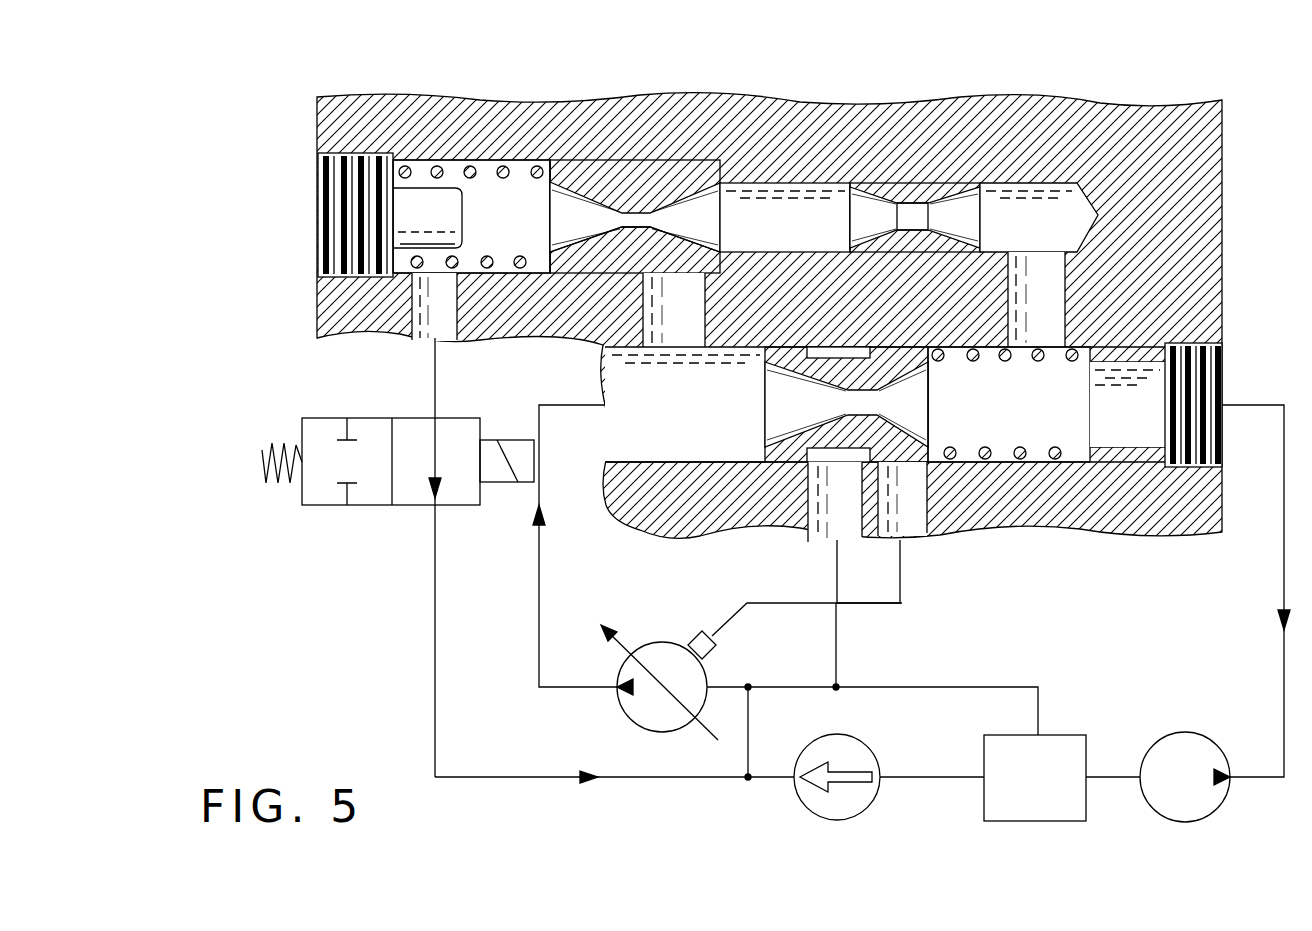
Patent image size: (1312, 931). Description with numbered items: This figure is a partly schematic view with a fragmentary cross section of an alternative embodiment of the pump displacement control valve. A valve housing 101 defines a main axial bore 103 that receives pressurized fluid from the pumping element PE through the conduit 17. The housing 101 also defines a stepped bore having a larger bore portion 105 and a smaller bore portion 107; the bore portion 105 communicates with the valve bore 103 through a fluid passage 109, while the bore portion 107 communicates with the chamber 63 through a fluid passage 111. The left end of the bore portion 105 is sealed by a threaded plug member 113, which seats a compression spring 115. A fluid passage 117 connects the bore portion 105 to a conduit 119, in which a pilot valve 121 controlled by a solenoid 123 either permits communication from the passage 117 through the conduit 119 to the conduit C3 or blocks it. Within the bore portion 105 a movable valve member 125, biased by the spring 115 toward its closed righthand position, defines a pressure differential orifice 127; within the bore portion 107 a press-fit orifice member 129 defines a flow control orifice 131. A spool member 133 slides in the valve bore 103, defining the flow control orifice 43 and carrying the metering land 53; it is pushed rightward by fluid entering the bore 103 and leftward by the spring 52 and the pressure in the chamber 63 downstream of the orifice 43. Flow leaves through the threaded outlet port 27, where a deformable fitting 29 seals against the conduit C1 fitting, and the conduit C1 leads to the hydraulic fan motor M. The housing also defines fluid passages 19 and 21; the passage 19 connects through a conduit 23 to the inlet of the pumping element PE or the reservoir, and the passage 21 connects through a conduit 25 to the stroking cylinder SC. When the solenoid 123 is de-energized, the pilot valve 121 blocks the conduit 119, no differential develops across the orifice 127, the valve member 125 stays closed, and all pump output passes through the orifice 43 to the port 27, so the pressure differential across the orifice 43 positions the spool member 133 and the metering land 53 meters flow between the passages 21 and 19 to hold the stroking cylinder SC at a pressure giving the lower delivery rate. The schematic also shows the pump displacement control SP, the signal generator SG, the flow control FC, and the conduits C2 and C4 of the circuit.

The valve housing 101 is at (1200, 190).
The main axial bore 103 is at (690, 470).
The larger bore portion 105 is at (515, 165).
The smaller bore portion 107 is at (762, 186).
The fluid passage 109 is at (705, 306).
The fluid passage 111 is at (1060, 300).
The threaded plug member 113 is at (338, 210).
The compression spring 115 is at (438, 171).
The fluid passage 117 is at (452, 302).
The conduit 119 is at (437, 367).
The pilot valve 121 is at (355, 400).
The solenoid 123 is at (518, 483).
The movable valve member 125 is at (598, 260).
The pressure differential orifice 127 is at (645, 211).
The orifice member 129 is at (925, 205).
The flow control orifice 131 is at (913, 232).
The spool member 133 is at (766, 455).
The deformable fitting 29 is at (1143, 347).
The threaded outlet port 27 is at (1222, 372).
The flow control orifice 43 is at (845, 355).
The metering land 53 is at (900, 355).
The chamber 63 is at (1009, 404).
The spring 52 is at (1035, 456).
The fluid passage 19 is at (812, 490).
The fluid passage 21 is at (926, 500).
The fluid conduit 23 is at (836, 573).
The fluid conduit 25 is at (902, 566).
The fluid conduit 17 is at (542, 572).
The pumping element PE is at (662, 642).
The pump displacement control SP is at (703, 737).
The stroking cylinder SC is at (702, 637).
The conduit C1 is at (1283, 563).
The conduit C2 is at (950, 778).
The conduit C3 is at (749, 730).
The conduit C4 is at (962, 687).
The signal generator SG is at (872, 757).
The flow control FC is at (1062, 735).
The hydraulic fan motor M is at (1185, 732).